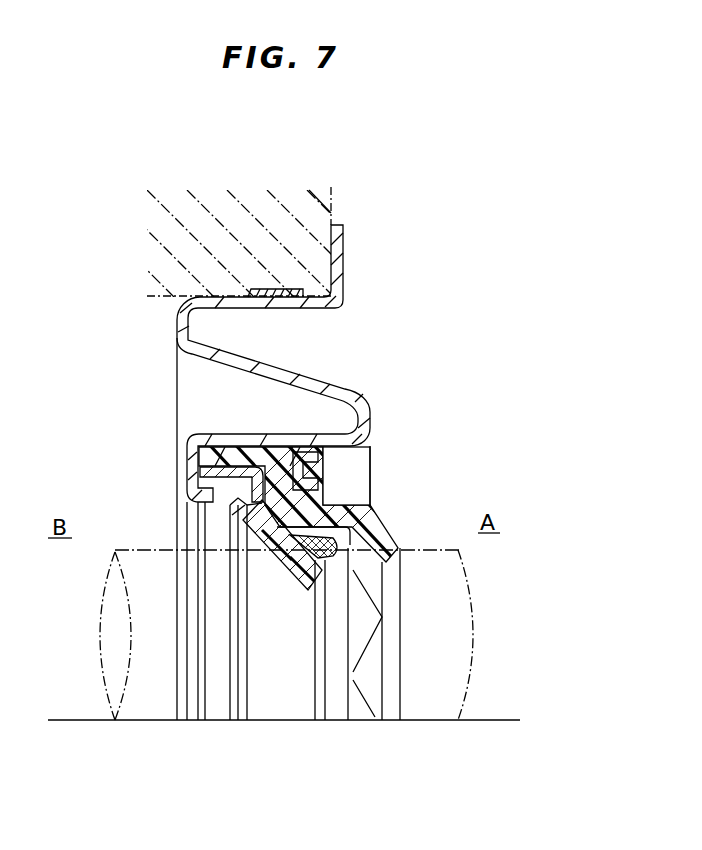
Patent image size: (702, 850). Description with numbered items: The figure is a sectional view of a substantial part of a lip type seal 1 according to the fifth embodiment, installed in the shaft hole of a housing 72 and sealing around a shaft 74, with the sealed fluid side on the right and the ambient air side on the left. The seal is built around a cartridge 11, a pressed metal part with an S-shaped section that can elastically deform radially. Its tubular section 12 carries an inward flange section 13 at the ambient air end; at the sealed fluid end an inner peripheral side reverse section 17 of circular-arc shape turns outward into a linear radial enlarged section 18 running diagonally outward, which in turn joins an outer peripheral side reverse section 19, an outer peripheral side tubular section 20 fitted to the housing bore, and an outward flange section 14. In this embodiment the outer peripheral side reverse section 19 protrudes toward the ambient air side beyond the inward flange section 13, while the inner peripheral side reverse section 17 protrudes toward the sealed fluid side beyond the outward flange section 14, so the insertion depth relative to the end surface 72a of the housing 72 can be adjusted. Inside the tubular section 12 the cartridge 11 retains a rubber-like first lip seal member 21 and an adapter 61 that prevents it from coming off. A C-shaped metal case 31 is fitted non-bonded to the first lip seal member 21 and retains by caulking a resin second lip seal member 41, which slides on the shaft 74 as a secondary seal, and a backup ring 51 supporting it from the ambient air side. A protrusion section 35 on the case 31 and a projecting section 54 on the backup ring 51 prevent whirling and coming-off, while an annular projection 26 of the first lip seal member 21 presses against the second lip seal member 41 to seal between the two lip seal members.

The lip type seal 1 is at (366, 446).
The cartridge 11 is at (348, 293).
The tubular section 12 is at (275, 437).
The inward flange section 13 is at (212, 478).
The outward flange section 14 is at (343, 260).
The inner peripheral side reverse section 17 is at (371, 432).
The radial enlarged section 18 is at (300, 375).
The outer peripheral side reverse section 19 is at (188, 328).
The outer peripheral side tubular section 20 is at (228, 291).
The first lip seal member 21 is at (268, 450).
The annular projection 26 is at (258, 517).
The case 31 is at (189, 461).
The protrusion section 35 is at (250, 505).
The second lip seal member 41 is at (288, 577).
The backup ring 51 is at (226, 497).
The projecting section 54 is at (250, 519).
The adapter 61 is at (327, 454).
The housing 72 is at (290, 203).
The end surface of the housing 72a is at (333, 212).
The shaft 74 is at (427, 707).